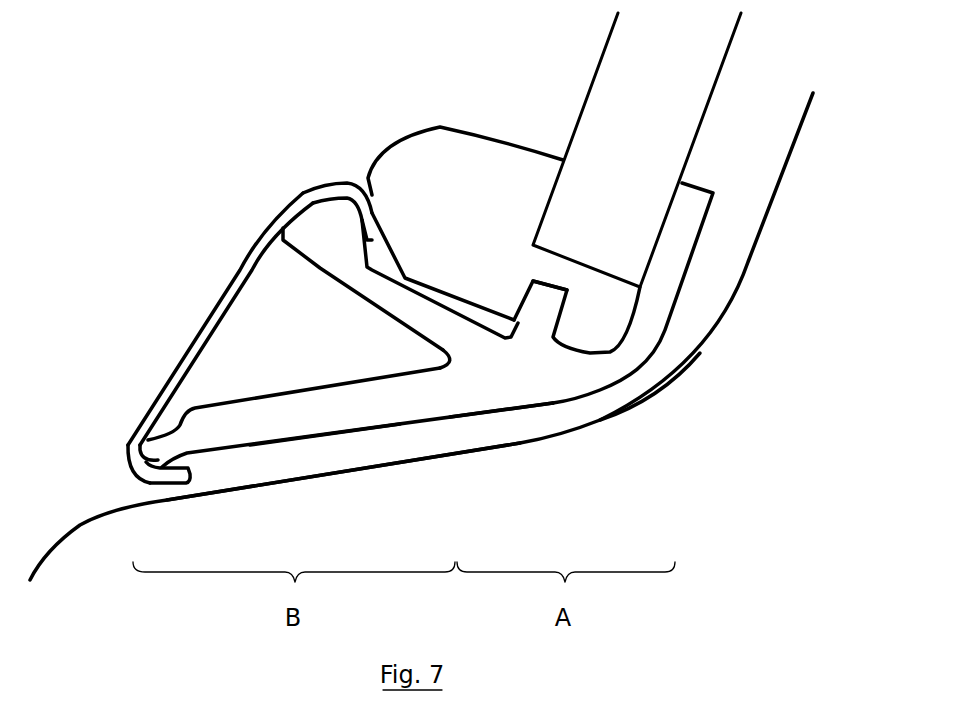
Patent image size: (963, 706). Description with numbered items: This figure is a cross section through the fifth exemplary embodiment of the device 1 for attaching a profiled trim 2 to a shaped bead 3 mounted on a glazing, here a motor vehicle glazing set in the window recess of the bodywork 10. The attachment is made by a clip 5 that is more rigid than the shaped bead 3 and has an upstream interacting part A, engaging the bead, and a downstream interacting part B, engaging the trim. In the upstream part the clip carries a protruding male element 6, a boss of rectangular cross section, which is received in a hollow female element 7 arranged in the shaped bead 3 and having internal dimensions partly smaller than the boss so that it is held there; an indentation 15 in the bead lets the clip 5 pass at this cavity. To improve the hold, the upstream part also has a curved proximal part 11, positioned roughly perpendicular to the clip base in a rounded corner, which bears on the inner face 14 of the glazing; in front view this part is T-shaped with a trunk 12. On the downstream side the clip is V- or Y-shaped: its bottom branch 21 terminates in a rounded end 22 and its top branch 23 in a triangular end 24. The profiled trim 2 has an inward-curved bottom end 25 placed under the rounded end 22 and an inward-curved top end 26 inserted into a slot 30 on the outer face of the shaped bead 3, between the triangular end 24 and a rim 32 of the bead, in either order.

The device 1 is at (311, 53).
The profiled trim 2 is at (197, 323).
The shaped bead 3 is at (470, 143).
The clip 5 is at (563, 383).
The protruding male element 6 is at (530, 297).
The hollow female element 7 is at (563, 288).
The bodywork 10 is at (777, 190).
The curved proximal part 11 is at (640, 352).
The trunk 12 is at (690, 212).
The inner face 14 is at (707, 85).
The indentation 15 is at (487, 330).
The bottom branch 21 is at (300, 417).
The rounded end 22 is at (132, 440).
The top branch 23 is at (350, 272).
The triangular end 24 is at (300, 237).
The bottom end 25 is at (132, 463).
The top end 26 is at (335, 188).
The slot 30 is at (390, 263).
The rim 32 is at (377, 177).